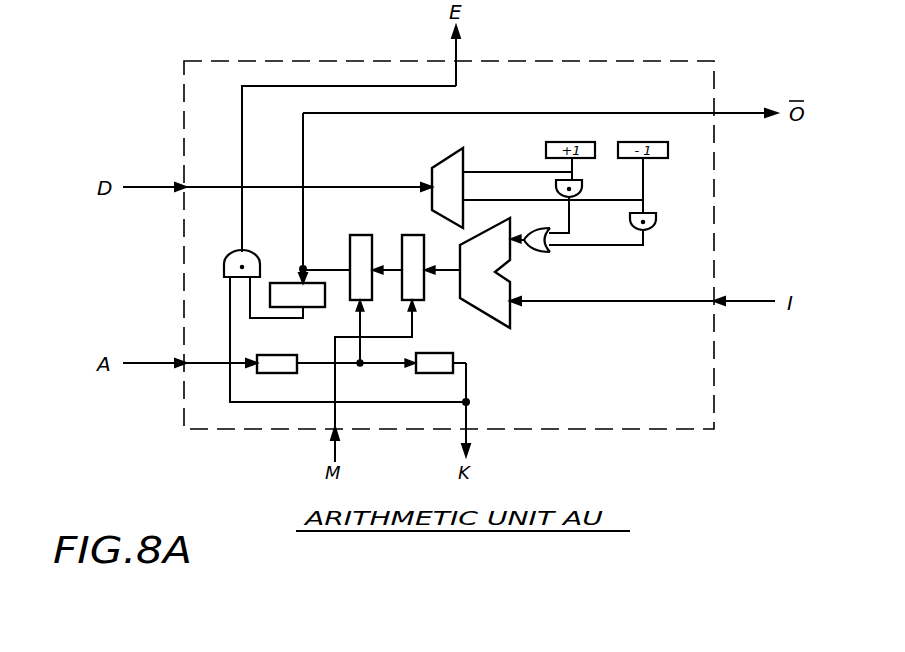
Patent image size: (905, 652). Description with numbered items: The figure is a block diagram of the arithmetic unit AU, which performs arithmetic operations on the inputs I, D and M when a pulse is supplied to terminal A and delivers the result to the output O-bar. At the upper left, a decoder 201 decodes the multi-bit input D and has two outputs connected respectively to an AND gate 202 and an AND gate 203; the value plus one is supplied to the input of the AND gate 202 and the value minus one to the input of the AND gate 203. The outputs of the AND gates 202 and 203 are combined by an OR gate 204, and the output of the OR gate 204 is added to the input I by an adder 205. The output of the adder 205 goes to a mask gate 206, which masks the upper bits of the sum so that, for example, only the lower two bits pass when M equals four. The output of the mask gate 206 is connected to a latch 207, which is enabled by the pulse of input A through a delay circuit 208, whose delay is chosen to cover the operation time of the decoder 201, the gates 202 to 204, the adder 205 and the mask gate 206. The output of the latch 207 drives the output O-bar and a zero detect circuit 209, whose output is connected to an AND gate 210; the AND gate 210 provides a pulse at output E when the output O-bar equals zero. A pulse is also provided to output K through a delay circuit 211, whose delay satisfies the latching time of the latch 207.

The decoder 201 is at (450, 163).
The AND gate 202 is at (587, 196).
The AND gate 203 is at (661, 228).
The OR gate 204 is at (546, 252).
The adder 205 is at (507, 289).
The mask gate 206 is at (424, 298).
The latch 207 is at (413, 214).
The delay circuit 208 is at (328, 396).
The zero detect circuit 209 is at (330, 338).
The AND gate 210 is at (231, 252).
The delay circuit 211 is at (453, 356).